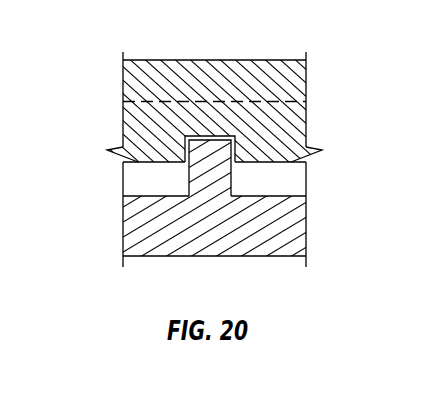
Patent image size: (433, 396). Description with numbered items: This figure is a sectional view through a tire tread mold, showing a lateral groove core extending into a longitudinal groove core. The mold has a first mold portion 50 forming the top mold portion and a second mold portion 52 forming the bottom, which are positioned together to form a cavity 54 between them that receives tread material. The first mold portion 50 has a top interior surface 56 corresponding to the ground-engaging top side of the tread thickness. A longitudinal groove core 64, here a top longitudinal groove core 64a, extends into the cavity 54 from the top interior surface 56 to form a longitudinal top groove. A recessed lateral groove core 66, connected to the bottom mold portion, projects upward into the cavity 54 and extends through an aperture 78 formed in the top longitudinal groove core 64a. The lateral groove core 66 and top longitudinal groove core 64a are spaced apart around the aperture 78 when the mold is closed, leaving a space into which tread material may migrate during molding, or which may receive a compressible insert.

The first mold portion 50 is at (197, 60).
The second mold portion 52 is at (245, 257).
The cavity 54 is at (300, 187).
The top interior surface 56 is at (306, 106).
The longitudinal groove core 64 is at (130, 125).
The top longitudinal groove core 64a is at (193, 142).
The lateral groove core 66 is at (200, 177).
The aperture 78 is at (323, 129).